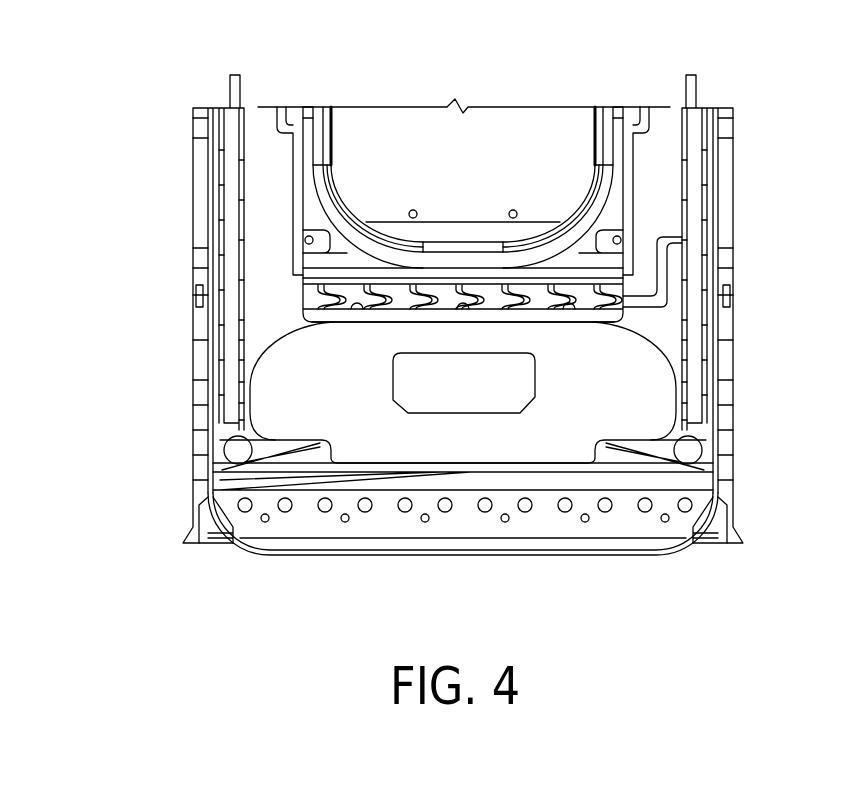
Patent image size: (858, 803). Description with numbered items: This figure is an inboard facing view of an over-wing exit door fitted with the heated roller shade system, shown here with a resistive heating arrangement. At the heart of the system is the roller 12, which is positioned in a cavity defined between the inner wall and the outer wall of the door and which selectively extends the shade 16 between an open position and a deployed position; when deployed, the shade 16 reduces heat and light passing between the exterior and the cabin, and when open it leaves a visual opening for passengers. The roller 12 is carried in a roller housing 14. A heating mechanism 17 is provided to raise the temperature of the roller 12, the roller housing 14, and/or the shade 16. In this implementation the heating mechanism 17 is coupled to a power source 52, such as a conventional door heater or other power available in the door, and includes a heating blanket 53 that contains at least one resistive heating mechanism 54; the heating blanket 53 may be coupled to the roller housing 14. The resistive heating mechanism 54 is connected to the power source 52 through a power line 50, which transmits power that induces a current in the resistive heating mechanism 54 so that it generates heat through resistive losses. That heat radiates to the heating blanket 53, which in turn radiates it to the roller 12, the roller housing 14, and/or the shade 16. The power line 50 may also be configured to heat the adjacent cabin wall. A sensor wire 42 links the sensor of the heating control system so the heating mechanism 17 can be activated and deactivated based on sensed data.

The roller 12 is at (313, 298).
The roller housing 14 is at (293, 277).
The shade 16 is at (460, 222).
The heating mechanism 17 is at (252, 383).
The sensor wire 42 is at (662, 237).
The power line 50 is at (657, 309).
The power source 52 is at (710, 108).
The heating blanket 53 is at (310, 297).
The resistive heating mechanism 54 is at (603, 310).